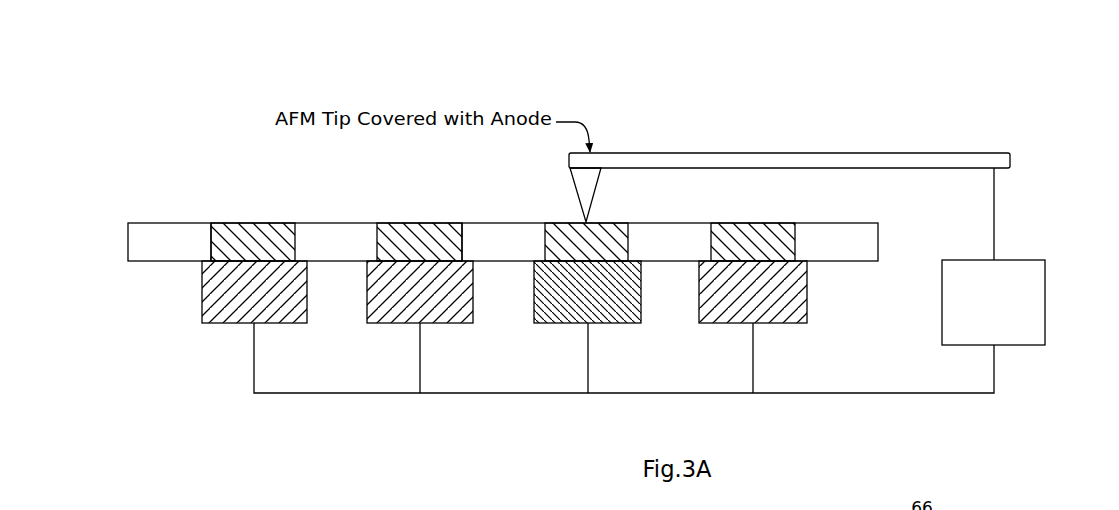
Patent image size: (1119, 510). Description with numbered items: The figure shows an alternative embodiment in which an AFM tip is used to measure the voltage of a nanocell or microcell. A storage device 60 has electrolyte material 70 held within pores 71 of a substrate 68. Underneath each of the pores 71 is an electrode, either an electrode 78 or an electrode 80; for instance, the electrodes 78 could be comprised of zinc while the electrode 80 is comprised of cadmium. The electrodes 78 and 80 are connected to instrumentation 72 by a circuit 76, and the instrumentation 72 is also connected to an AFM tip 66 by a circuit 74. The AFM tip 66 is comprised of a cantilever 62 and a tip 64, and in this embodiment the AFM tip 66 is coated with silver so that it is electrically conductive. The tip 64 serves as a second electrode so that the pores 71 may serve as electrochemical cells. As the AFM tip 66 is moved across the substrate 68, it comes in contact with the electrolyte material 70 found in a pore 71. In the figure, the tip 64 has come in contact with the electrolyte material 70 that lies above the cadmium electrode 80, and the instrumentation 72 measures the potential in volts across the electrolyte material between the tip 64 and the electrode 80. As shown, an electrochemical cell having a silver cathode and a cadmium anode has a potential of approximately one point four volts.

The storage device 60 is at (946, 60).
The cantilever 62 is at (900, 152).
The tip 64 is at (599, 187).
The AFM tip 66 is at (789, 122).
The substrate 68 is at (128, 247).
The electrolyte material 70 is at (258, 221).
The pores 71 is at (210, 243).
The instrumentation 72 is at (1046, 294).
The circuit 74 is at (996, 200).
The circuit 76 is at (553, 395).
The electrodes 78 is at (269, 326).
The electrode 80 is at (621, 326).